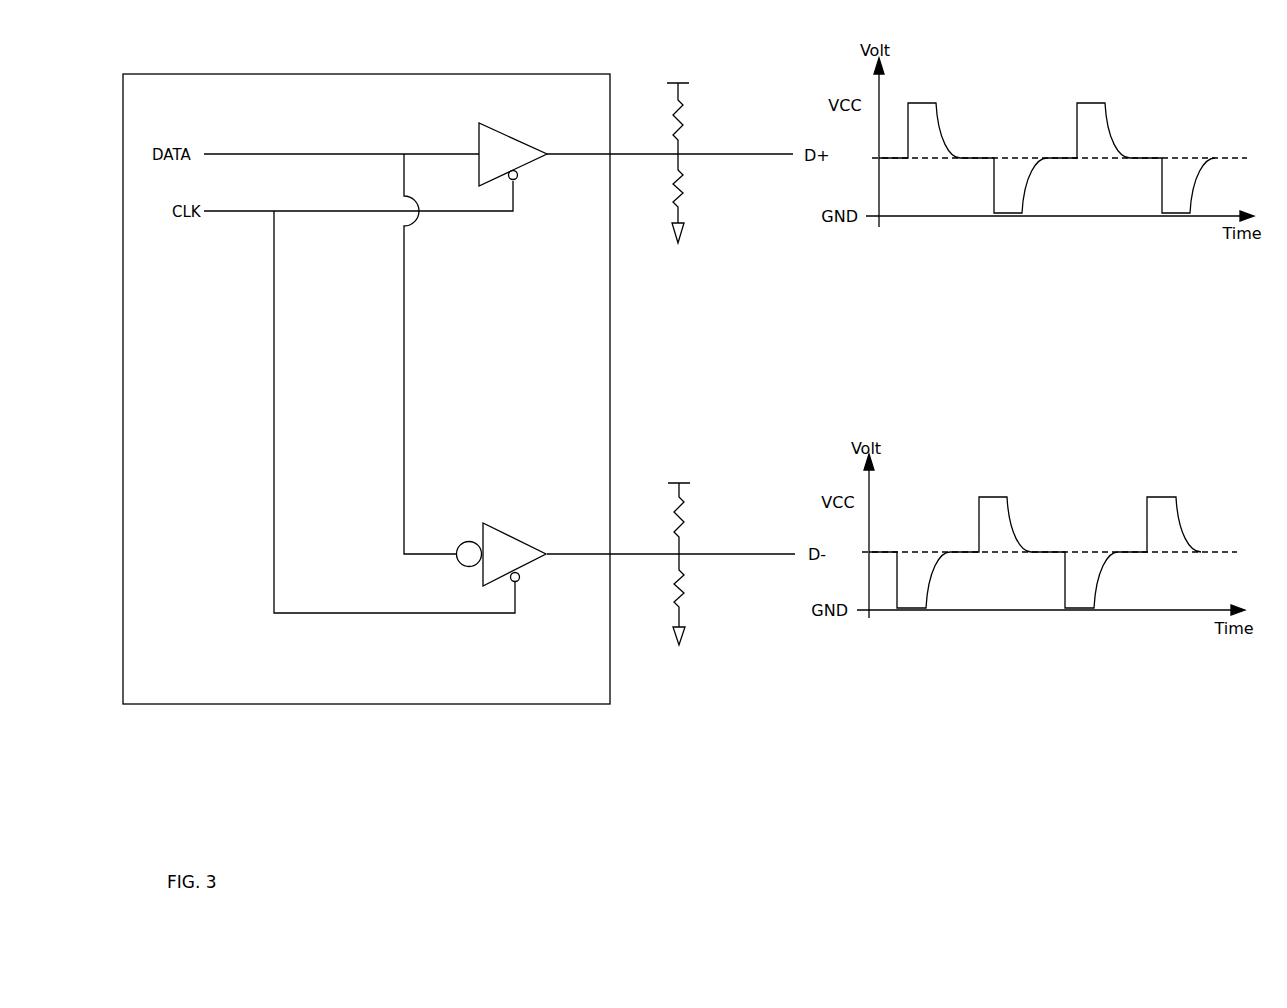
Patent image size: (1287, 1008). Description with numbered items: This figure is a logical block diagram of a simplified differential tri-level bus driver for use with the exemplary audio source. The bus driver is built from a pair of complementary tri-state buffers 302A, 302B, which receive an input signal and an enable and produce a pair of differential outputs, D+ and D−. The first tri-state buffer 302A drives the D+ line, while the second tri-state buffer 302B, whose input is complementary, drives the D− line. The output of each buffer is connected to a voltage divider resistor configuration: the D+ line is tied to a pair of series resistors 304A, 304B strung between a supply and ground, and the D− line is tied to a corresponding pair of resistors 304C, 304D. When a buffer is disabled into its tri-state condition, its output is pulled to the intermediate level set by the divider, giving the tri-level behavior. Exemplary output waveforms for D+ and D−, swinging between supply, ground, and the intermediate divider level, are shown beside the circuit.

The complementary tri-state buffer 302A is at (503, 128).
The complementary tri-state buffer 302B is at (503, 528).
The voltage divider resistor 304A is at (683, 117).
The voltage divider resistor 304B is at (683, 205).
The voltage divider resistor 304C is at (686, 517).
The voltage divider resistor 304D is at (686, 605).